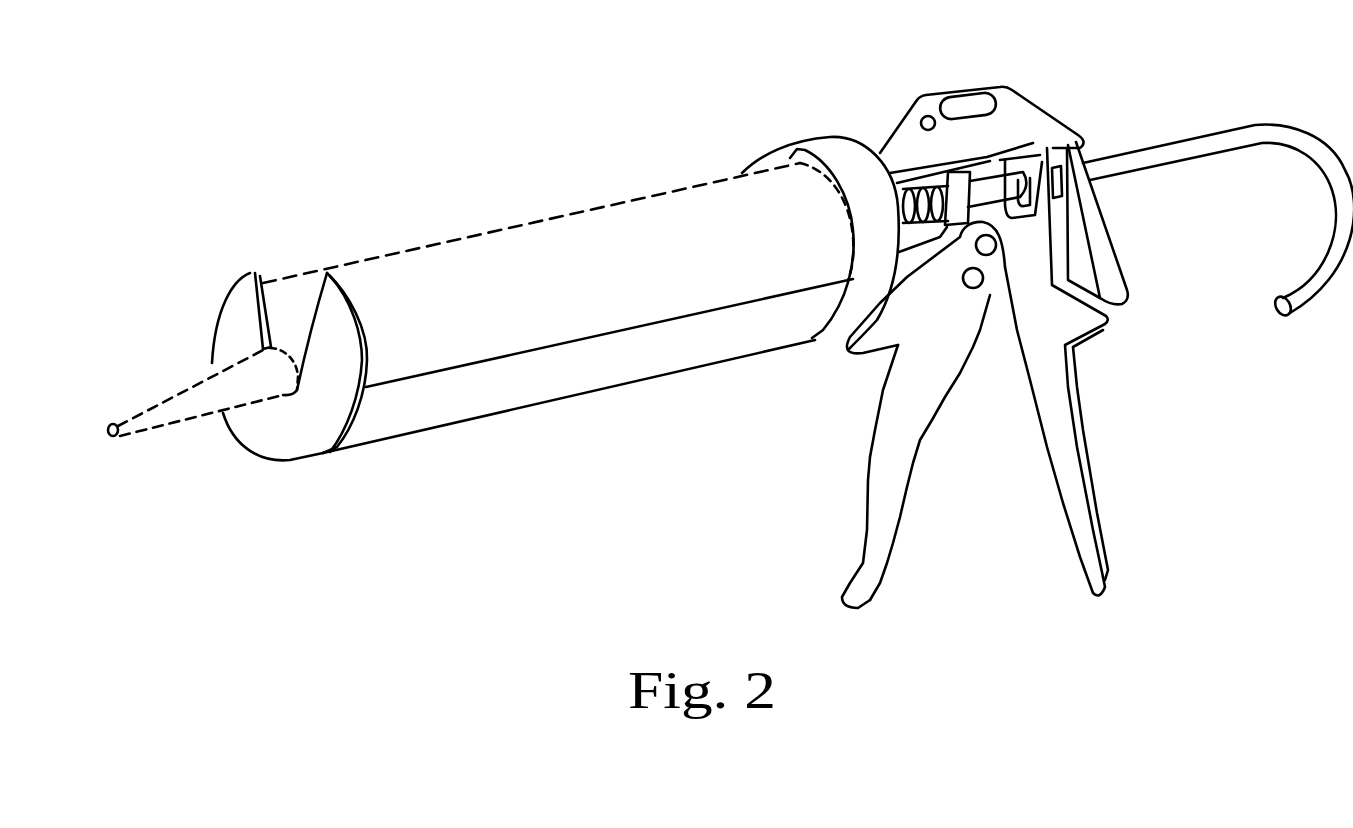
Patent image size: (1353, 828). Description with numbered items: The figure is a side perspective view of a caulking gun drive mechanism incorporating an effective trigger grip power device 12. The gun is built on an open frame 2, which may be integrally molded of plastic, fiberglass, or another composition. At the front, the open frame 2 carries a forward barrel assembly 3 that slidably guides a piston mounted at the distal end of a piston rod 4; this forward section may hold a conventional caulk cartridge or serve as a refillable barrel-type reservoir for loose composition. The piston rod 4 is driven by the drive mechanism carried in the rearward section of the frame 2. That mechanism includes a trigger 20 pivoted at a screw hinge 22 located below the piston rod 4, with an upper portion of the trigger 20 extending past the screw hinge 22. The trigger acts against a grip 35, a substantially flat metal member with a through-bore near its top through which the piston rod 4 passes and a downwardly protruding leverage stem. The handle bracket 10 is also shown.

The open frame 2 is at (1044, 123).
The forward barrel assembly 3 is at (632, 383).
The piston rod 4 is at (1296, 128).
The rear handle bracket 10 is at (1133, 295).
The trigger grip power device 12 is at (1003, 222).
The trigger 20 is at (908, 482).
The screw hinge 22 is at (975, 290).
The grip 35 is at (950, 172).